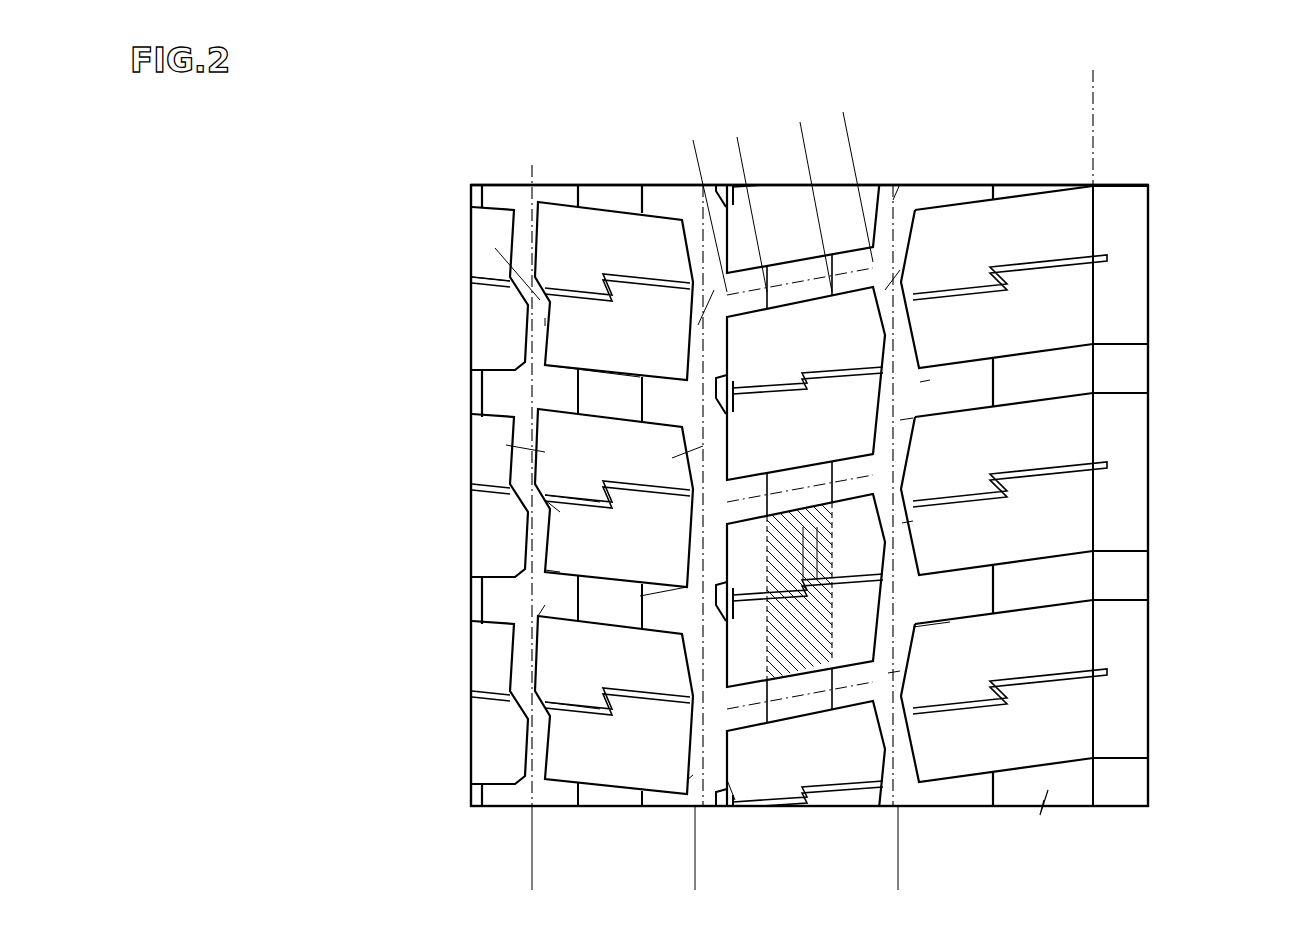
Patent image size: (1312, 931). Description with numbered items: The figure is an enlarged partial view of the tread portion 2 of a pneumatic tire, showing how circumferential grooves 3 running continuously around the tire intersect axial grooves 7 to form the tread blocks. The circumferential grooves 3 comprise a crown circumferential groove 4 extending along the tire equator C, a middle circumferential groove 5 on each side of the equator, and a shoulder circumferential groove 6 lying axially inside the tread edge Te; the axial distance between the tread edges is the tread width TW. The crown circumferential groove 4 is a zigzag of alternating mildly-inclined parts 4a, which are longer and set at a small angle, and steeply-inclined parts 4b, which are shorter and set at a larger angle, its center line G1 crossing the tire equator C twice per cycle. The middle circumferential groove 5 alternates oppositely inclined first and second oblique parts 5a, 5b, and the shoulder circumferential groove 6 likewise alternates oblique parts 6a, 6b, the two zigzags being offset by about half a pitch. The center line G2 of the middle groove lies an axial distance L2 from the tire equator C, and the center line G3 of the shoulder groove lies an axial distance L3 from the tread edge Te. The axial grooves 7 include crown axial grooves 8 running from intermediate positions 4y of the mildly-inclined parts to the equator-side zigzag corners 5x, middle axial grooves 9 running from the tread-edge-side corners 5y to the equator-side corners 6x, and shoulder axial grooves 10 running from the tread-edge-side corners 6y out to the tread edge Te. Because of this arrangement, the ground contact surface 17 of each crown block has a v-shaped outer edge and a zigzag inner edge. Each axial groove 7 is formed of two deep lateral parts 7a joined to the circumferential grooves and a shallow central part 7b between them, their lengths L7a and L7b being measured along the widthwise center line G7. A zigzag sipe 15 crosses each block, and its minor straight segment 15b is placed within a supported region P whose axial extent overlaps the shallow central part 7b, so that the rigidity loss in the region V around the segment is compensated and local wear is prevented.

The tread portion 2 is at (1198, 146).
The circumferential grooves 3 is at (669, 469).
The crown circumferential groove 4 is at (487, 469).
The middle circumferential groove 5 is at (769, 469).
The shoulder circumferential groove 6 is at (930, 469).
The axial grooves 7 is at (606, 594).
The crown axial grooves 8 is at (606, 526).
The middle axial grooves 9 is at (946, 470).
The shoulder axial grooves 10 is at (1076, 410).
The deep lateral parts 7a is at (600, 390).
The shallow central part 7b is at (660, 407).
The mildly-inclined part 4a is at (547, 322).
The steeply-inclined part 4b is at (547, 293).
The intermediate position 4y is at (540, 600).
The first oblique part 5a is at (600, 538).
The second oblique part 5b is at (693, 660).
The tire-equator-side zigzag corner 5x is at (560, 572).
The tread-edge-side zigzag corner 5y is at (730, 833).
The first oblique part 6a is at (900, 420).
The second oblique part 6b is at (902, 523).
The tire-equator-side zigzag corner 6x is at (888, 673).
The tread-edge-side zigzag corner 6y is at (920, 382).
The sipe 15 is at (913, 627).
The minor straight segment 15b is at (693, 775).
The ground contact surface 17 is at (560, 512).
The center line of crown circumferential groove G1 is at (487, 493).
The center line of middle circumferential groove G2 is at (787, 506).
The center line of shoulder circumferential groove G3 is at (947, 800).
The widthwise center line of axial groove G7 is at (788, 292).
The tire equator C is at (536, 180).
The tread edge Te is at (1096, 150).
The tread width TW is at (1081, 77).
The supported region P is at (860, 565).
The region around minor straight segment V is at (829, 557).
The axial distance of middle groove center line from tire equator L2 is at (683, 881).
The axial distance of shoulder groove center line from tread edge L3 is at (1081, 881).
The length of deep lateral part L7a is at (746, 128).
The length of central part L7b is at (809, 117).